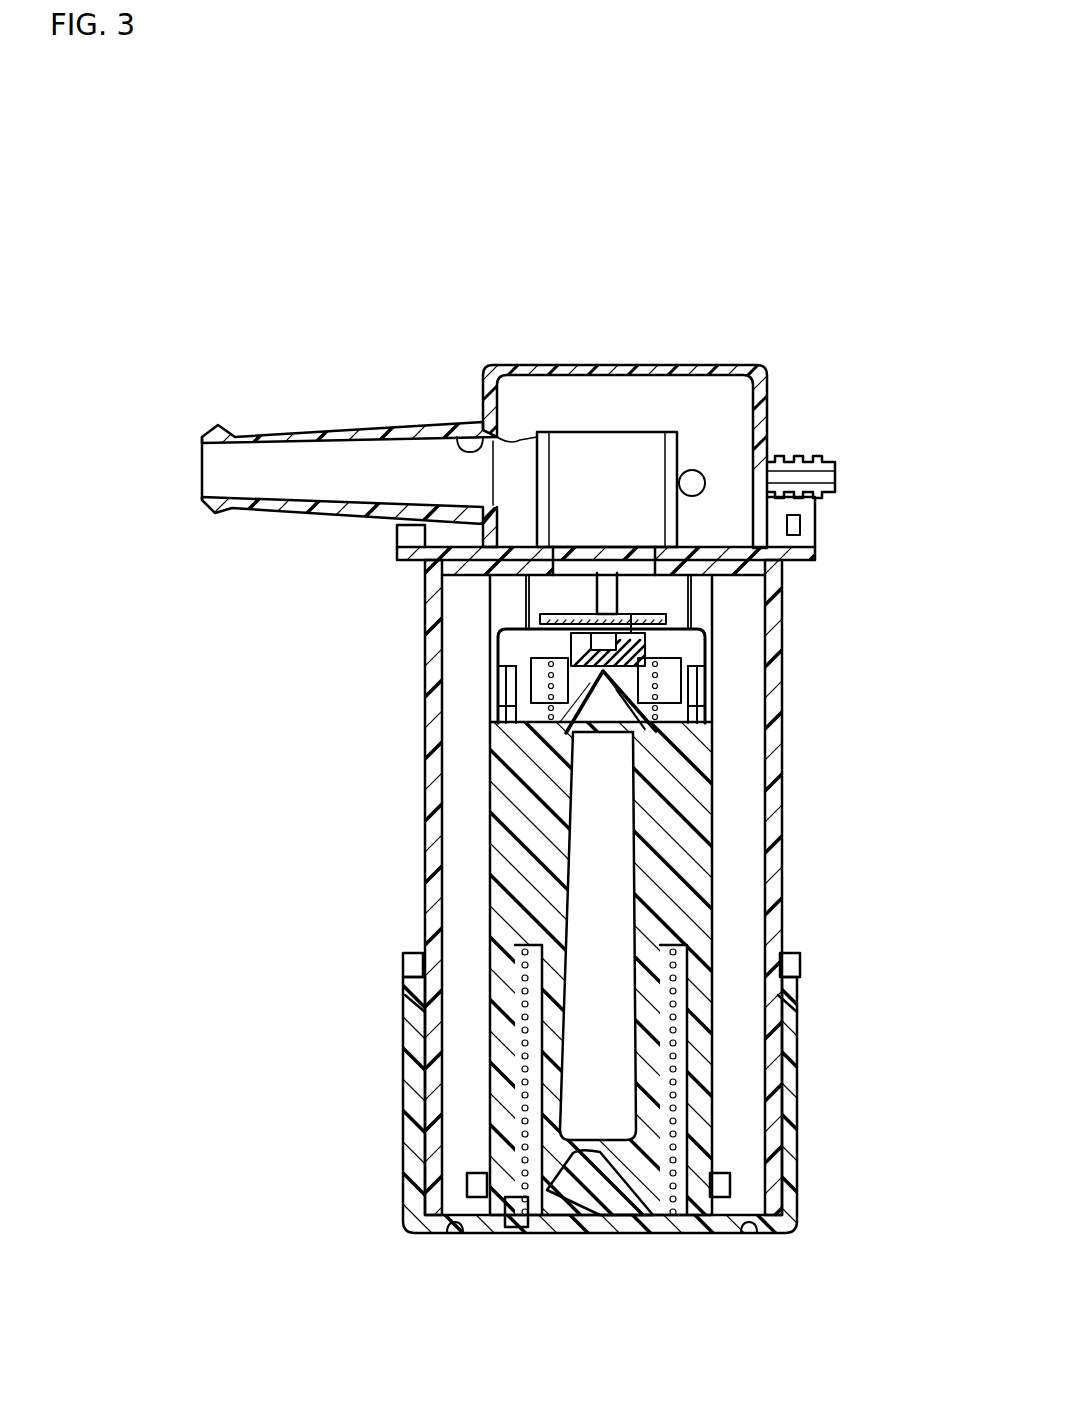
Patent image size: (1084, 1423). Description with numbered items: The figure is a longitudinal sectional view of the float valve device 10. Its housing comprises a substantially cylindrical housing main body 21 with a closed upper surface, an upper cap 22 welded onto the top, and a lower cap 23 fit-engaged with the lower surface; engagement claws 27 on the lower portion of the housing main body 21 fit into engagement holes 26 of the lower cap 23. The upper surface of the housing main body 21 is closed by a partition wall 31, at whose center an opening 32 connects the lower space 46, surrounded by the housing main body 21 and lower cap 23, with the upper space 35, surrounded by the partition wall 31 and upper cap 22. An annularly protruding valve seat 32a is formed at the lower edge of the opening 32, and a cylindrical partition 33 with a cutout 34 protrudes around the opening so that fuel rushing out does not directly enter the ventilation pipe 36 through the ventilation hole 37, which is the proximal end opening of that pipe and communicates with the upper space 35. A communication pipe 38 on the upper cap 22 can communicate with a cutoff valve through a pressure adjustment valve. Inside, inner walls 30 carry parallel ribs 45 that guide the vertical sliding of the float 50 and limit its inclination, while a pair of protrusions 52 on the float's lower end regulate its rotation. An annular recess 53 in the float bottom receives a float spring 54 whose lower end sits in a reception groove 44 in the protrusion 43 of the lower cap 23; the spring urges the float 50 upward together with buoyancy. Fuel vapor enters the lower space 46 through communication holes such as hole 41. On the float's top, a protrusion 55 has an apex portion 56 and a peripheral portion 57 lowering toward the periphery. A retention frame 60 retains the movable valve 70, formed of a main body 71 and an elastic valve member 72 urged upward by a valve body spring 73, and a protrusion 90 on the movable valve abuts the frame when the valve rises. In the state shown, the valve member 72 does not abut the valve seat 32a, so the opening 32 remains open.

The float valve device 10 is at (627, 326).
The housing main body 21 is at (782, 885).
The upper cap 22 is at (560, 360).
The lower cap 23 is at (805, 1160).
The engagement holes 26 is at (405, 1015).
The engagement claws 27 is at (410, 992).
The inner walls 30 is at (667, 595).
The partition wall 31 is at (705, 555).
The opening 32 is at (640, 545).
The valve seat 32a is at (560, 578).
The partition 33 is at (535, 450).
The cutout 34 is at (685, 445).
The upper space 35 is at (732, 405).
The ventilation pipe 36 is at (320, 430).
The ventilation hole 37 is at (470, 450).
The communication pipe 38 is at (822, 467).
The communication hole 41 is at (452, 1235).
The protrusion 43 is at (570, 1170).
The reception groove 44 is at (515, 1227).
The ribs 45 is at (665, 588).
The lower space 46 is at (458, 833).
The float 50 is at (688, 855).
The protrusions 52 is at (470, 1185).
The annular recess 53 is at (682, 995).
The float spring 54 is at (668, 1108).
The protrusion 55 is at (751, 735).
The apex portion 56 is at (612, 705).
The peripheral portion 57 is at (622, 690).
The retention frame 60 is at (715, 650).
The movable valve 70 is at (542, 611).
The main body 71 is at (490, 700).
The valve member 72 is at (705, 623).
The valve body spring 73 is at (650, 677).
The protrusion 90 is at (520, 630).